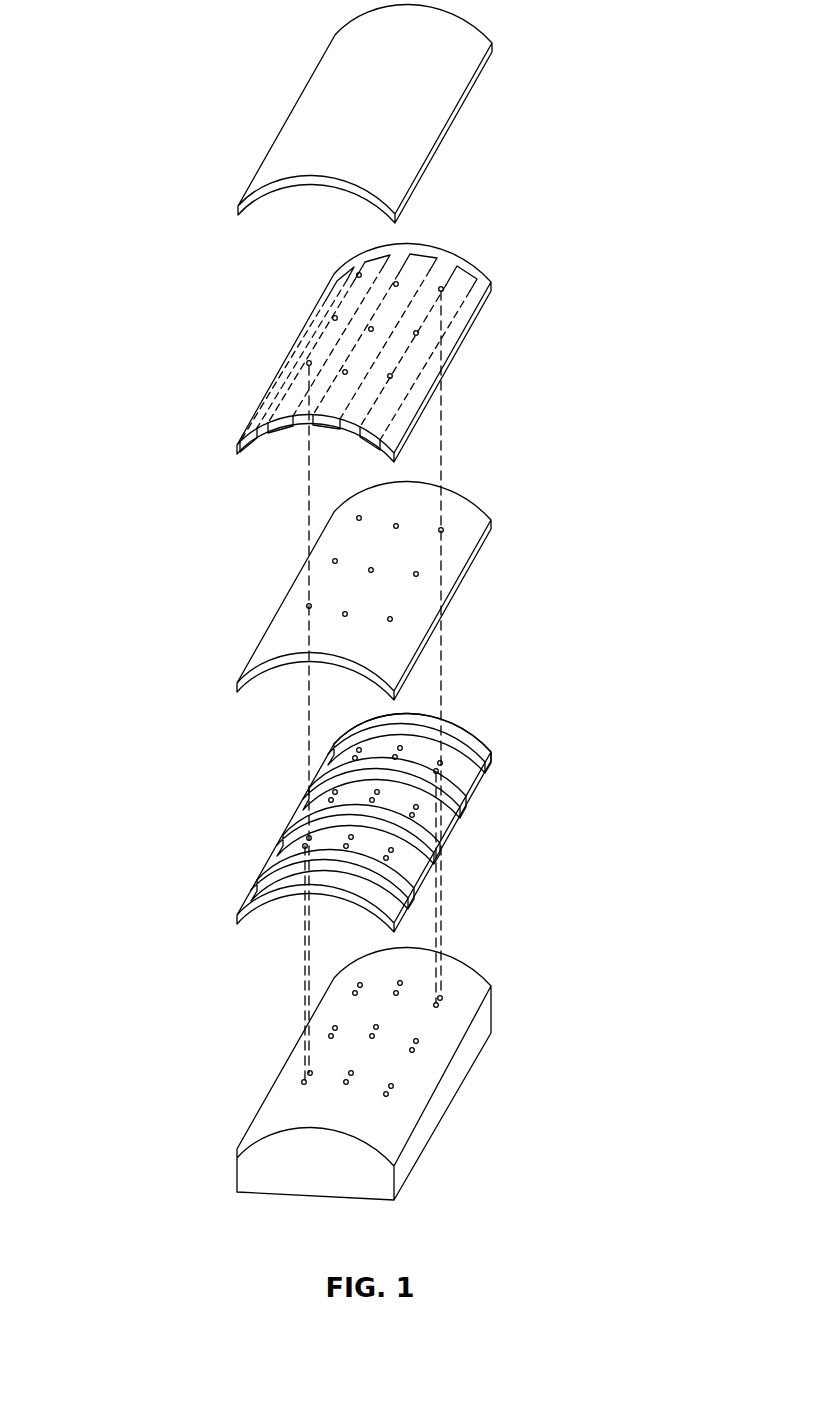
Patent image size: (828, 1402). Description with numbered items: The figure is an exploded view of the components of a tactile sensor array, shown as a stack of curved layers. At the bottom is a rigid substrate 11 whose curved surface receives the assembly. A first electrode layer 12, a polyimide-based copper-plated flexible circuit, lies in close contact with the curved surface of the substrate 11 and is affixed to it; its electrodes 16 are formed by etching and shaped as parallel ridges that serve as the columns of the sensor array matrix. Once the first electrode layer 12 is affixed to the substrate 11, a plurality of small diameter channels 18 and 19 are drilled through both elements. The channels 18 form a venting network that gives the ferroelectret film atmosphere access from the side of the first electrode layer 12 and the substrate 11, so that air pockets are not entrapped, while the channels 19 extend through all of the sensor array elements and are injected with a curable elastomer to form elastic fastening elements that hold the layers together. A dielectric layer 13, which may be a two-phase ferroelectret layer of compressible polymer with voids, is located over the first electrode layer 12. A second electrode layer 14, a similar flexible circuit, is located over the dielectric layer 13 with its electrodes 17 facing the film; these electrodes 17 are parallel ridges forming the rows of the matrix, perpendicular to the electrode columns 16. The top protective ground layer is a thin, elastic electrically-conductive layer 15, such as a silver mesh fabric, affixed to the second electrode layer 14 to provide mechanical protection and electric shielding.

The rigid substrate 11 is at (442, 1038).
The first electrode layer 12 is at (368, 814).
The dielectric layer 13 is at (457, 520).
The second electrode layer 14 is at (442, 301).
The electrically-conductive layer 15 is at (432, 114).
The electrodes 16 is at (470, 755).
The electrodes 17 is at (427, 268).
The channels 18 is at (438, 1005).
The channels 19 is at (442, 998).